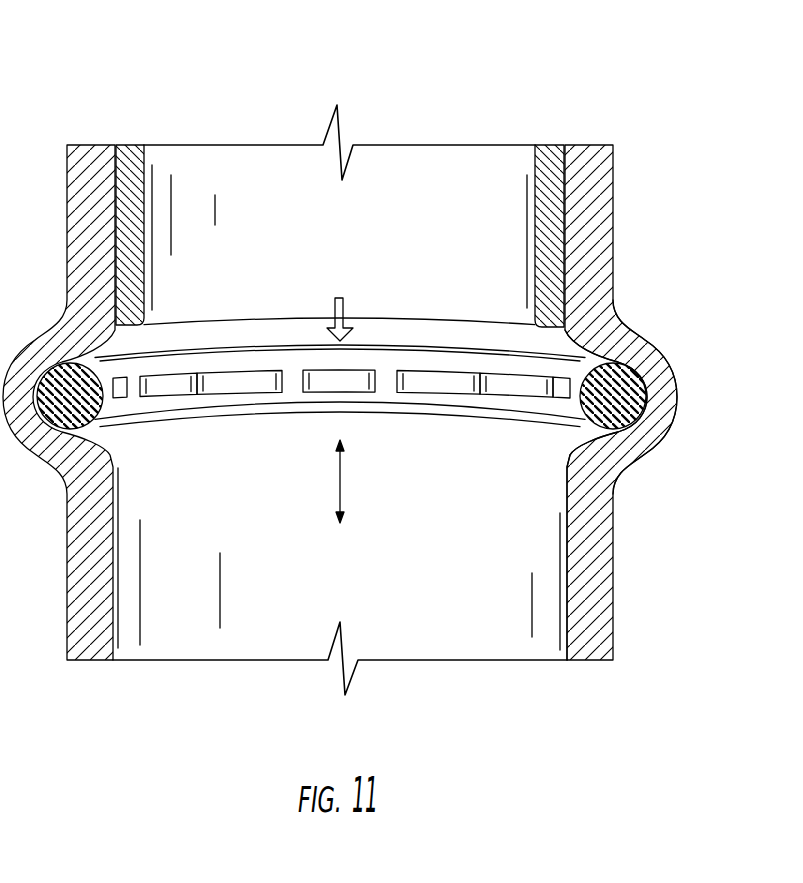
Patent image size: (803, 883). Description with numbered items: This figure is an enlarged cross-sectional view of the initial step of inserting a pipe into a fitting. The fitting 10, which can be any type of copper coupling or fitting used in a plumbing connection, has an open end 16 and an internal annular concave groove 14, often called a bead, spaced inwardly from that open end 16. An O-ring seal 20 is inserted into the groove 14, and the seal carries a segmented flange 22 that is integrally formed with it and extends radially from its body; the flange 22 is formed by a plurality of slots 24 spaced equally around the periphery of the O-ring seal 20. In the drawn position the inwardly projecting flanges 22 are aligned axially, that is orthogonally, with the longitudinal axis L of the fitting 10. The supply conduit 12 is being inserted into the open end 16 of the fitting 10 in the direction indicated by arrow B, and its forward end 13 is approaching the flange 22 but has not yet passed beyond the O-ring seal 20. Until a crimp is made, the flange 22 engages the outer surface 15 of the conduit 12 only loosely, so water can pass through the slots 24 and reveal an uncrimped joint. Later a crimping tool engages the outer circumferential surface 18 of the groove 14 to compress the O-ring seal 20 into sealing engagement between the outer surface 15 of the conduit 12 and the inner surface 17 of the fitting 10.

The pipe fitting 10 is at (368, 383).
The supply conduit 12 is at (536, 211).
The end of conduit 13 is at (430, 323).
The internal annular concave groove 14 is at (645, 410).
The outer surface of conduit 15 is at (115, 180).
The open end 16 is at (590, 145).
The inner surface of fitting 17 is at (568, 497).
The outer circumferential surface 18 is at (677, 390).
The O-ring seal 20 is at (634, 394).
The segmented flange 22 is at (250, 381).
The slots 24 is at (207, 390).
The insertion direction arrow B is at (333, 308).
The longitudinal axis L is at (340, 483).